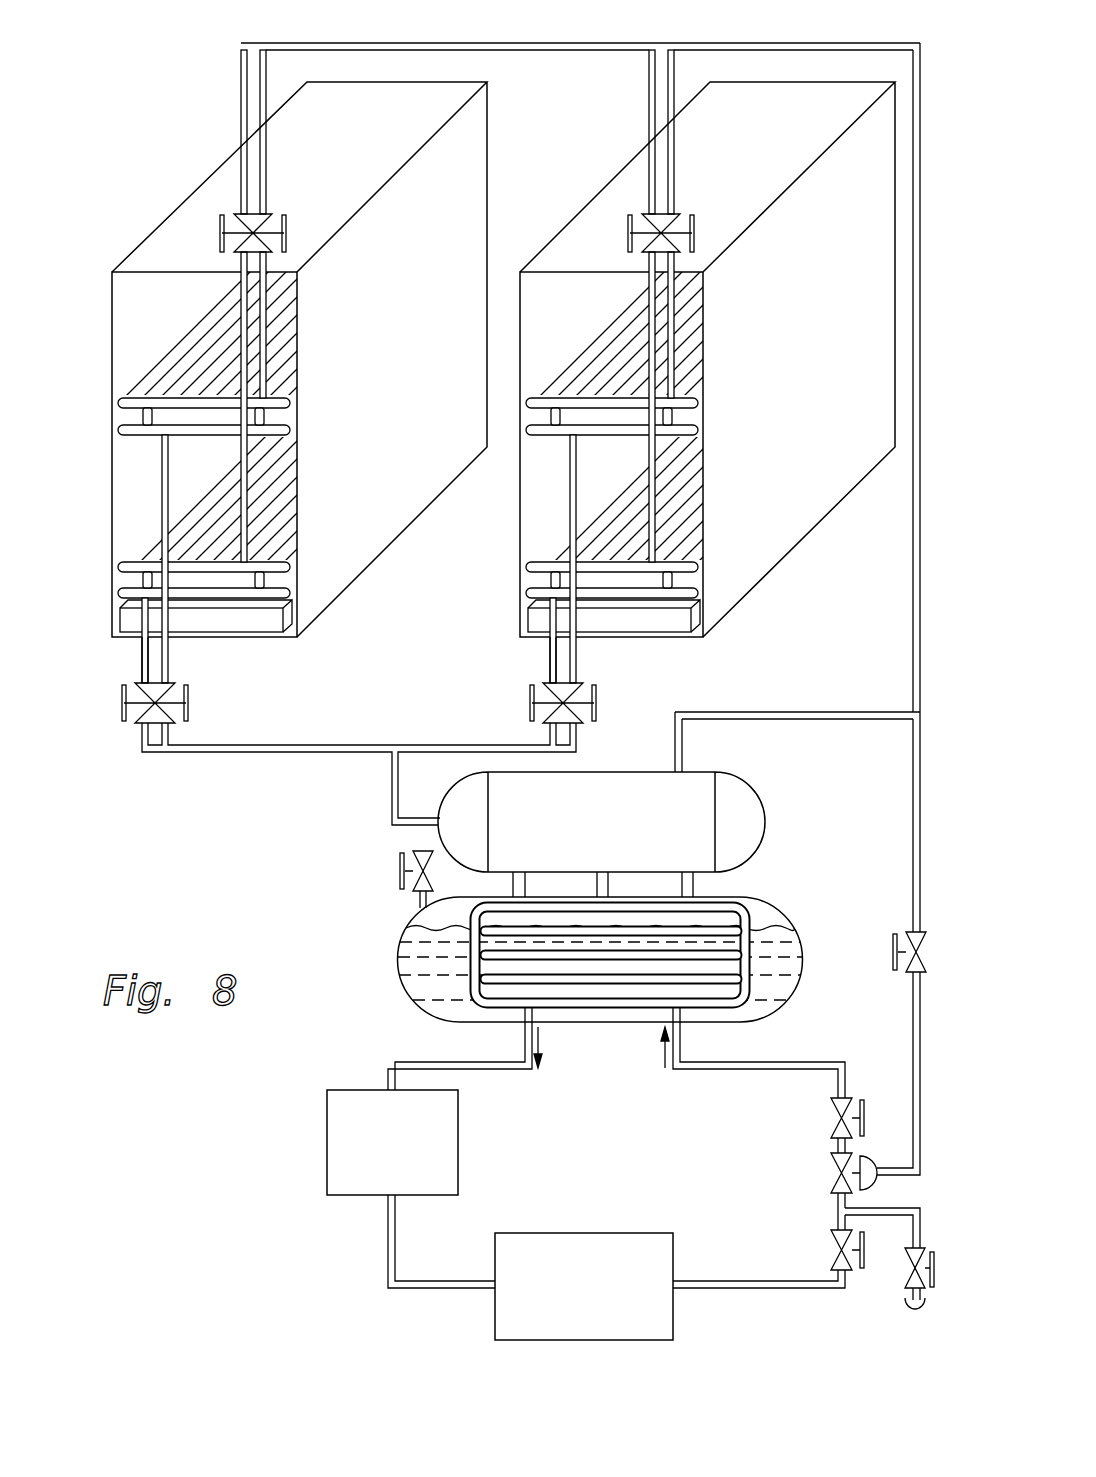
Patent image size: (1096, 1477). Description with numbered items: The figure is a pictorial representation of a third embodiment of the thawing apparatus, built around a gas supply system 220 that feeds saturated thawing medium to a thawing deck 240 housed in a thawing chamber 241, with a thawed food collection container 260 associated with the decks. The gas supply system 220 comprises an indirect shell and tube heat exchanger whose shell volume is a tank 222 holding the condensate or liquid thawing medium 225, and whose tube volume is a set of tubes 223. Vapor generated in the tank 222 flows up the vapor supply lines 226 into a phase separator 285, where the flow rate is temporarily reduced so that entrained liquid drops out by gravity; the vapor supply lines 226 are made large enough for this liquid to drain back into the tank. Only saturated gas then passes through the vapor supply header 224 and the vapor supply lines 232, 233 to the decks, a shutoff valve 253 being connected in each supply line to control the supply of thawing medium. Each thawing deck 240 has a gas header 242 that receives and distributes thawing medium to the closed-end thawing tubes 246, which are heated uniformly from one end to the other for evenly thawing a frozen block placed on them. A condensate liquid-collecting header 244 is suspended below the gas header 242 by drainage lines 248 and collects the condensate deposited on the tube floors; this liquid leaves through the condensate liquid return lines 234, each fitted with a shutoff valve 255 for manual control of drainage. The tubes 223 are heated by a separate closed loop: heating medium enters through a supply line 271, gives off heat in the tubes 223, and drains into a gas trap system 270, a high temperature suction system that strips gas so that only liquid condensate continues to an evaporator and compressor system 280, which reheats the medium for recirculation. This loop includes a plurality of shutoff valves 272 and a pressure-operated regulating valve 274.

The gas supply system 220 is at (245, 869).
The tank 222 is at (796, 923).
The heat exchanger tubes 223 is at (400, 955).
The vapor supply header 224 is at (913, 540).
The liquid thawing medium 225 is at (425, 990).
The vapor supply lines 226 is at (688, 895).
The vapor supply lines 232 is at (650, 72).
The gas supply line 233 is at (241, 88).
The condensate liquid return lines 234 is at (142, 750).
The thawing deck 240 is at (163, 295).
The thawing chamber 241 is at (618, 172).
The gas header 242 is at (118, 400).
The condensate liquid-collecting header 244 is at (118, 430).
The thawing tubes 246 is at (190, 357).
The drainage lines 248 is at (143, 645).
The shutoff valve 253 is at (253, 208).
The shutoff valves 255 is at (191, 703).
The thawed food collection container 260 is at (520, 636).
The gas trap system 270 is at (459, 1133).
The supply line 271 is at (750, 1069).
The shutoff valves 272 is at (831, 1262).
The pressure-operated regulating valve 274 is at (872, 1155).
The evaporator and compressor system 280 is at (528, 1233).
The phase separator 285 is at (756, 793).